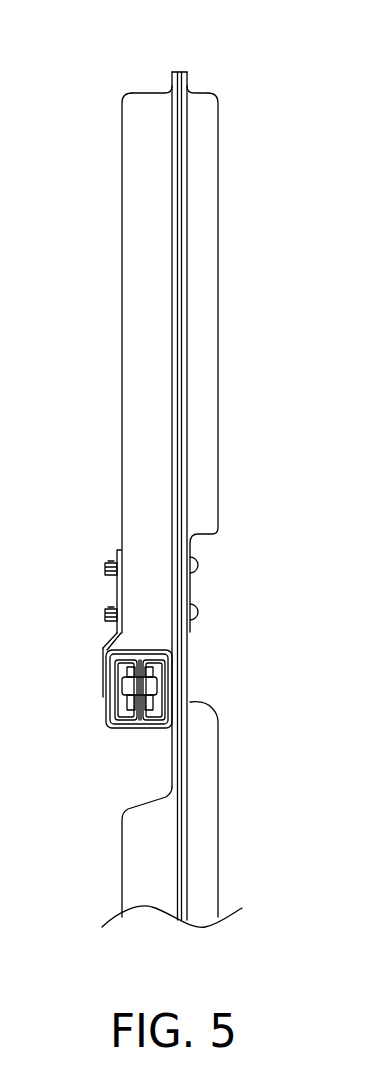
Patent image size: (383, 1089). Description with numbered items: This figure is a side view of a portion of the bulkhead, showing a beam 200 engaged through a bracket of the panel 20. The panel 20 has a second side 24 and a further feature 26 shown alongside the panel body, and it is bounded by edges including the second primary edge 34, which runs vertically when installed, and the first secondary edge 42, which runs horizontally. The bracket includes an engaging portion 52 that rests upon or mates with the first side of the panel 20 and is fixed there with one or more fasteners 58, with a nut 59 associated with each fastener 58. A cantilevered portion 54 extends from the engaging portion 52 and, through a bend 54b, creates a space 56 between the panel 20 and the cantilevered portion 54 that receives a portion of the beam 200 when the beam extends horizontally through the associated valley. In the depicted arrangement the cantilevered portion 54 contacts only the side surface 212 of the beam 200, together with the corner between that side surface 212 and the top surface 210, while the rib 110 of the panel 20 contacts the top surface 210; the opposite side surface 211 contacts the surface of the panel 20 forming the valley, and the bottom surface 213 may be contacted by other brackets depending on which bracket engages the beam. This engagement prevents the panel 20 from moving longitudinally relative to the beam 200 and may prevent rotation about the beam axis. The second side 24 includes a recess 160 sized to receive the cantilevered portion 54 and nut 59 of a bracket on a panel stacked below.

The panel 20 is at (205, 355).
The second side 24 is at (218, 272).
The left wall 26 is at (121, 326).
The second primary edge 34 is at (178, 430).
The first secondary edge 42 is at (178, 72).
The engaging portion 52 is at (117, 597).
The cantilevered portion 54 is at (106, 678).
The bracket bend 54b is at (110, 650).
The space 56 is at (128, 650).
The fastener 58 is at (113, 562).
The nut 59 is at (196, 564).
The rib 110 is at (133, 282).
The recess 160 is at (215, 654).
The beam 200 is at (126, 729).
The top surface 210 is at (153, 648).
The side surface 211 is at (188, 702).
The side surface 212 is at (106, 707).
The bottom surface 213 is at (158, 735).